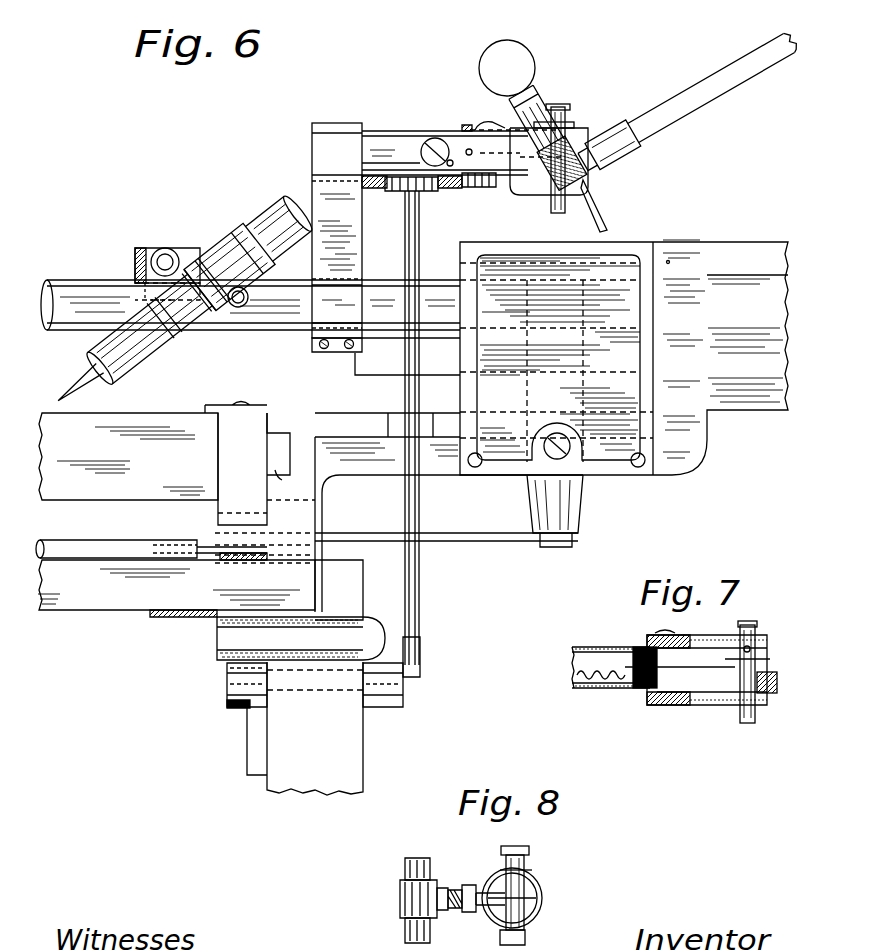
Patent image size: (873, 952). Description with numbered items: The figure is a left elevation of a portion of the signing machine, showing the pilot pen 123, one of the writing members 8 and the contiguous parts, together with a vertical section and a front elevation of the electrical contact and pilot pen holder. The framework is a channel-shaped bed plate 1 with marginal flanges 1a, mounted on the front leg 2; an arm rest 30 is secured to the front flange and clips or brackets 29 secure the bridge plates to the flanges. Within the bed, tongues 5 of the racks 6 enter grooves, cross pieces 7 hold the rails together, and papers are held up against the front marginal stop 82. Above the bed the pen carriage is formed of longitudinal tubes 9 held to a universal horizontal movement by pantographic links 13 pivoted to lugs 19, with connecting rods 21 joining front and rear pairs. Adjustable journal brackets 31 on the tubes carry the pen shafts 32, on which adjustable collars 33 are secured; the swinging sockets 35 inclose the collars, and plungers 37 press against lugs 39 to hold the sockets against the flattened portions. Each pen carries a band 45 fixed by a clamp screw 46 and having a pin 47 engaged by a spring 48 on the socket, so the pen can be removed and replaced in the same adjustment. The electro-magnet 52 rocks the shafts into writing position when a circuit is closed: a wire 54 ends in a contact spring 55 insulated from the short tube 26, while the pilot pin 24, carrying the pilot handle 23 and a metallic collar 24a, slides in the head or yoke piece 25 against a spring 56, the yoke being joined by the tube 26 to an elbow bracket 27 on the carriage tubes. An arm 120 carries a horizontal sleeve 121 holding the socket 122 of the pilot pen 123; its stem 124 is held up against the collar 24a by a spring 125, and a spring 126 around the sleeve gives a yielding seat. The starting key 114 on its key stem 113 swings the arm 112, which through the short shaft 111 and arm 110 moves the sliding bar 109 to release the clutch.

In FIG. 6, the bed plate 1 is at (176, 585).
In FIG. 6, the marginal flanges 1a is at (348, 462).
In FIG. 6, the front leg 2 is at (315, 728).
In FIG. 6, the tongues 5 is at (286, 484).
In FIG. 6, the racks 6 is at (266, 469).
In FIG. 6, the cross pieces 7 is at (128, 456).
In FIG. 6, the writing members 8 is at (118, 372).
In FIG. 6, the longitudinal tubes 9 is at (60, 282).
In FIG. 6, the pantographic links 13 is at (455, 543).
In FIG. 6, the lugs 19 is at (578, 512).
In FIG. 6, the connecting rods 21 is at (174, 548).
In FIG. 6, the pilot handle 23 is at (689, 101).
In FIG. 7, the pilot handle 23 is at (770, 694).
In FIG. 6, the pilot pin 24 is at (570, 118).
In FIG. 7, the pilot pin 24 is at (744, 724).
In FIG. 8, the pilot pin 24 is at (530, 851).
In FIG. 7, the metallic collar 24a is at (752, 659).
In FIG. 8, the metallic collar 24a is at (535, 870).
In FIG. 6, the head or yoke piece 25 is at (512, 190).
In FIG. 7, the head or yoke piece 25 is at (703, 706).
In FIG. 8, the head or yoke piece 25 is at (543, 898).
In FIG. 6, the short tube 26 is at (390, 150).
In FIG. 7, the short tube 26 is at (585, 690).
In FIG. 6, the elbow bracket 27 is at (322, 128).
In FIG. 6, the clips or brackets 29 is at (556, 361).
In FIG. 6, the arm rest 30 is at (624, 357).
In FIG. 6, the adjustable journal brackets 31 is at (190, 247).
In FIG. 6, the pen shafts 32 is at (163, 256).
In FIG. 6, the adjustable collars 33 is at (134, 260).
In FIG. 6, the swinging sockets 35 is at (193, 330).
In FIG. 6, the plungers 37 is at (145, 290).
In FIG. 6, the lugs 39 is at (150, 300).
In FIG. 6, the band 45 is at (262, 276).
In FIG. 6, the clamp screw 46 is at (240, 308).
In FIG. 6, the pin 47 is at (204, 258).
In FIG. 6, the spring 48 is at (222, 252).
In FIG. 6, the electro-magnet 52 is at (407, 357).
In FIG. 7, the wire 54 is at (565, 676).
In FIG. 7, the contact spring 55 is at (706, 669).
In FIG. 7, the spring 56 is at (690, 630).
In FIG. 6, the front marginal stop 82 is at (254, 410).
In FIG. 6, the sliding bar 109 is at (253, 740).
In FIG. 6, the arm 110 is at (227, 708).
In FIG. 6, the short shaft 111 is at (226, 687).
In FIG. 6, the arm 112 is at (398, 690).
In FIG. 6, the key stem 113 is at (404, 232).
In FIG. 6, the starting key 114 is at (391, 193).
In FIG. 6, the arm 120 is at (472, 144).
In FIG. 8, the horizontal sleeve 121 is at (438, 888).
In FIG. 6, the socket 122 is at (590, 180).
In FIG. 8, the socket 122 is at (400, 915).
In FIG. 6, the pilot pen 123 is at (542, 100).
In FIG. 8, the pilot pen 123 is at (404, 875).
In FIG. 8, the stem 124 is at (482, 908).
In FIG. 6, the spring 125 is at (452, 190).
In FIG. 8, the spring 126 is at (456, 888).